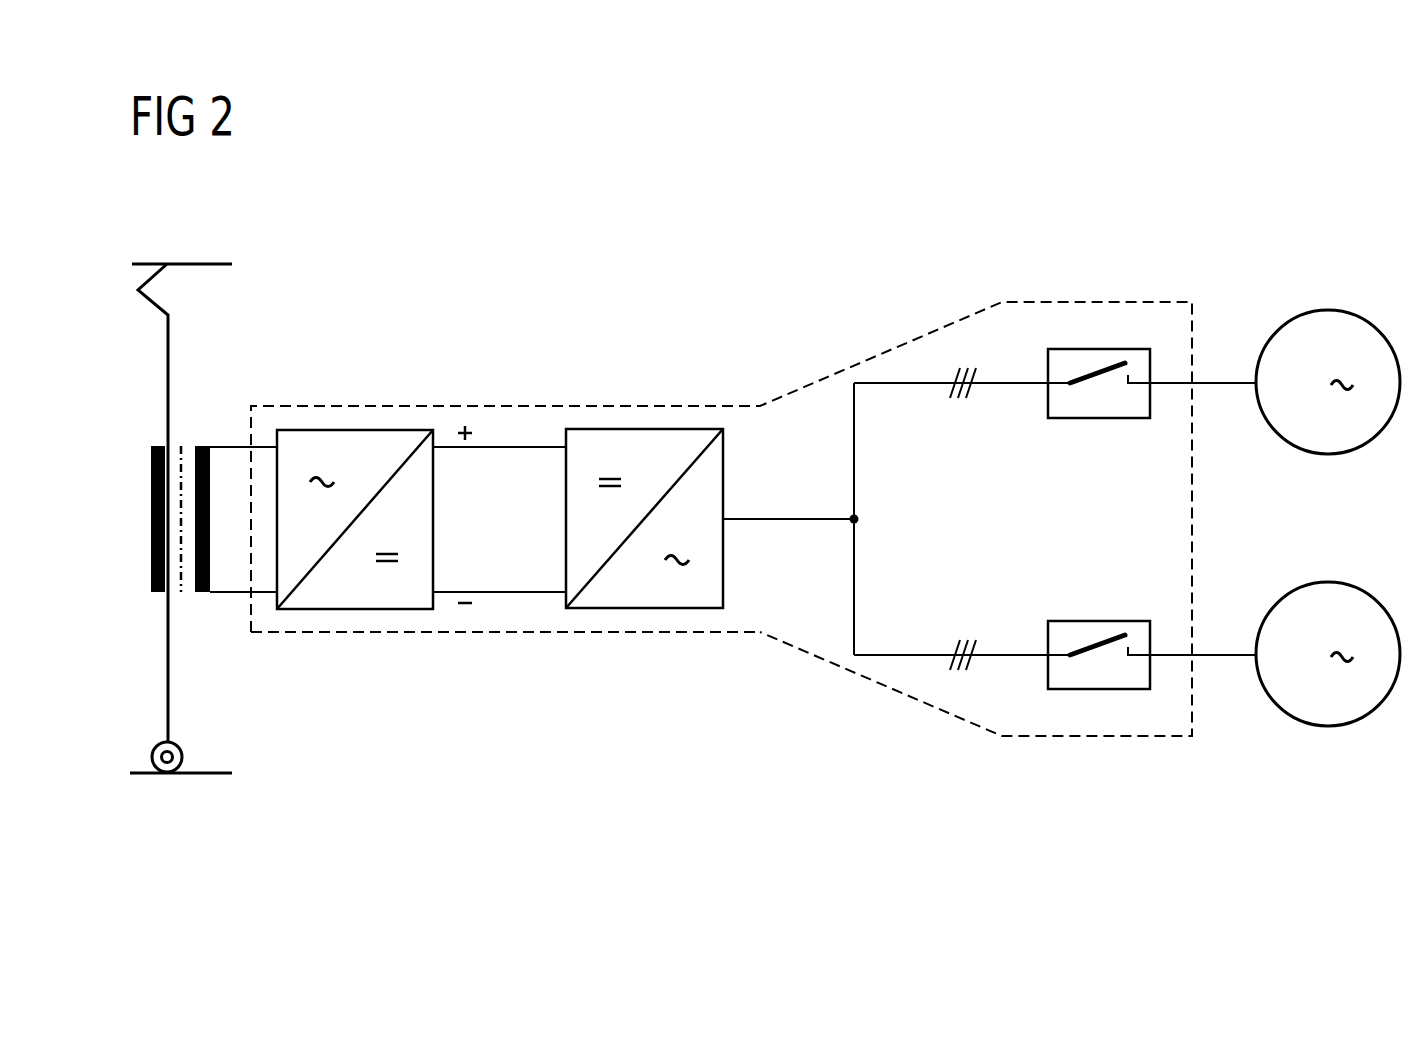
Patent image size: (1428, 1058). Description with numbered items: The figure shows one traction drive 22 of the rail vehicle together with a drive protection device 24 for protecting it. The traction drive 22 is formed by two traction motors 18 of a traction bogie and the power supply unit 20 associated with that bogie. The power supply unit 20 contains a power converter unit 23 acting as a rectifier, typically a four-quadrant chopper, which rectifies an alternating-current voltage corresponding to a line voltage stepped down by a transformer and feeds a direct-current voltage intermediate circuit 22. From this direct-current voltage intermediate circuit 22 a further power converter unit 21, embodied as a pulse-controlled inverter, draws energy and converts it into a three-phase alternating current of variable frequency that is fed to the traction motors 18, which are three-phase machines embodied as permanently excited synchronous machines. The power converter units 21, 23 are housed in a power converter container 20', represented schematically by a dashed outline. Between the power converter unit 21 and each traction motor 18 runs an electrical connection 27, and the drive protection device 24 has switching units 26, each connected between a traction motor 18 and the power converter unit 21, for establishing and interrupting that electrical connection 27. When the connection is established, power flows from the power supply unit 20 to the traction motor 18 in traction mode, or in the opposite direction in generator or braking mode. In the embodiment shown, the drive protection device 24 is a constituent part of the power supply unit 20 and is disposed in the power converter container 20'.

The traction motor 18 is at (1360, 316).
The power supply unit 20 is at (721, 502).
The power converter container 20' is at (505, 682).
The power converter unit 21 is at (620, 429).
The direct-current voltage intermediate circuit 22 is at (508, 440).
The power converter unit 23 is at (355, 430).
The drive protection device 24 is at (1085, 335).
The switching unit 26 is at (1128, 349).
The electrical connection 27 is at (1016, 381).